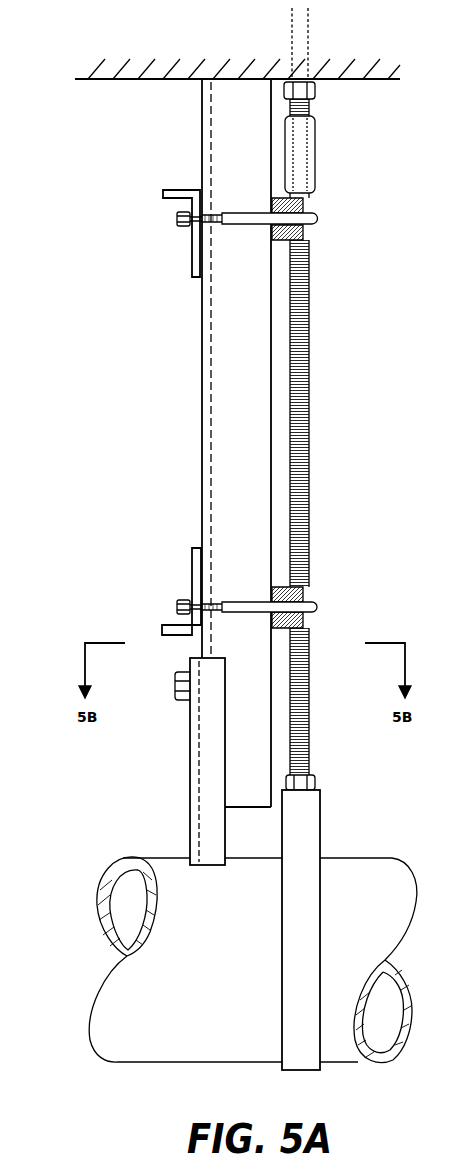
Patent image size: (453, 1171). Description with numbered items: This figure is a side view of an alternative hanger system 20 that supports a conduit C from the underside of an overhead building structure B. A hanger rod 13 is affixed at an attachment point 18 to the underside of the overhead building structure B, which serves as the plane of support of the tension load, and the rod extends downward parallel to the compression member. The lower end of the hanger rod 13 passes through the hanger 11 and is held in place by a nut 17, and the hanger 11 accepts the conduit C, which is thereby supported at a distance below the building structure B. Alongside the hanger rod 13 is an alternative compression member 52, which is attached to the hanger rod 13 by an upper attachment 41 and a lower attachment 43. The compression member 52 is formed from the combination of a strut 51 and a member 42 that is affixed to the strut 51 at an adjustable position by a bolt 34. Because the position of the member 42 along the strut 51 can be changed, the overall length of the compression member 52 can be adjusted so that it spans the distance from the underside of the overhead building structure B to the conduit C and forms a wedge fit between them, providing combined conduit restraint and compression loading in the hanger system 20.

The overhead building structure B is at (183, 80).
The hanger system 20 is at (375, 176).
The hanger rod 13 is at (310, 413).
The attachment point 18 is at (313, 81).
The strut 51 is at (220, 466).
The compression member 52 is at (92, 603).
The upper attachment 41 is at (306, 229).
The lower attachment 43 is at (306, 597).
The member 42 is at (193, 825).
The bolt 34 is at (177, 690).
The nut 17 is at (322, 762).
The hanger 11 is at (325, 811).
The conduit C is at (358, 868).